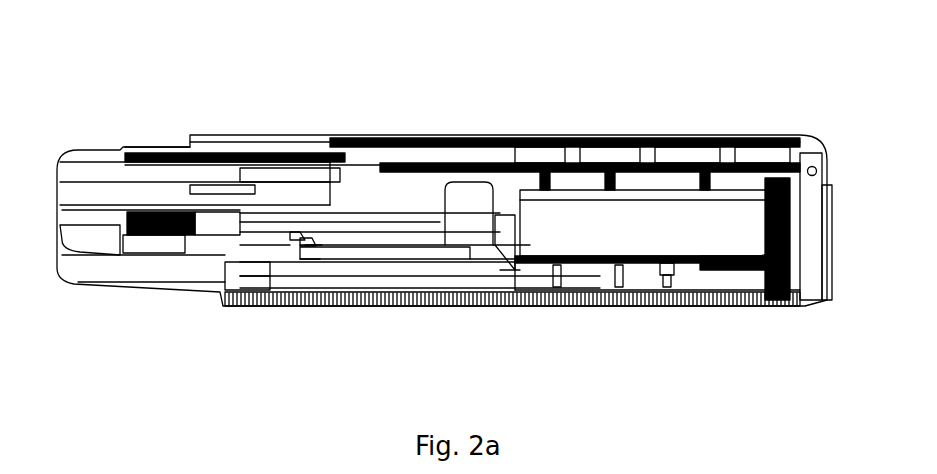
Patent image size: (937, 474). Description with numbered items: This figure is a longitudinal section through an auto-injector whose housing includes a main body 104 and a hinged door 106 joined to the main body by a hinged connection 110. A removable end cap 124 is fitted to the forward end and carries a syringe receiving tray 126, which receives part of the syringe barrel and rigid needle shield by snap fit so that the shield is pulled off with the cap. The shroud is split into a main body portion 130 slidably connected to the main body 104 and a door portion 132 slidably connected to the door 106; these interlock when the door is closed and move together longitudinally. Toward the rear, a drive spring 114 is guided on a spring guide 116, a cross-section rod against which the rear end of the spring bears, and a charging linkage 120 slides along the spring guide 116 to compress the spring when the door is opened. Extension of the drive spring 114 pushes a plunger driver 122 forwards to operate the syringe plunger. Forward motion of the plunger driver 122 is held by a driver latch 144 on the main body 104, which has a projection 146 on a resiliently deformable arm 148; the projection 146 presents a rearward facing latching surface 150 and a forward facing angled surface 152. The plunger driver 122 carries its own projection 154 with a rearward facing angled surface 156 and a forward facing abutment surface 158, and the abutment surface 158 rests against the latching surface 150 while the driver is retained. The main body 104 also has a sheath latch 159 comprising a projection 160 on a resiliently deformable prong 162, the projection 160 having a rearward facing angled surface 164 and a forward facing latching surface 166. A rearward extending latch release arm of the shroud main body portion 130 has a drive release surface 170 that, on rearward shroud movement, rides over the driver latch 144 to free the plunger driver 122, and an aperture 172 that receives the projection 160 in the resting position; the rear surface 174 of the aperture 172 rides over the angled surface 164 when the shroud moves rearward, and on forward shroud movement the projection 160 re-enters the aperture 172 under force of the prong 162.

The main body 104 is at (615, 205).
The hinged door 106 is at (432, 138).
The hinged connection 110 is at (818, 170).
The drive spring 114 is at (690, 292).
The spring guide 116 is at (417, 277).
The charging linkage 120 is at (273, 282).
The plunger driver 122 is at (778, 272).
The end cap 124 is at (78, 260).
The syringe receiving tray 126 is at (213, 186).
The main body portion 130 is at (157, 255).
The door portion 132 is at (150, 147).
The driver latch 144 is at (485, 261).
The projection 146 is at (477, 235).
The resiliently deformable arm 148 is at (390, 232).
The rearward facing latching surface 150 is at (515, 216).
The forward facing angled surface 152 is at (470, 251).
The projection 154 is at (514, 264).
The rearward facing angled surface 156 is at (533, 257).
The forward facing abutment surface 158 is at (506, 263).
The sheath latch 159 is at (307, 257).
The projection 160 is at (313, 246).
The resiliently deformable prong 162 is at (272, 246).
The rearward facing angled surface 164 is at (302, 236).
The forward facing latching surface 166 is at (318, 246).
The drive release surface 170 is at (428, 242).
The aperture 172 is at (296, 226).
The rear surface 174 is at (270, 285).